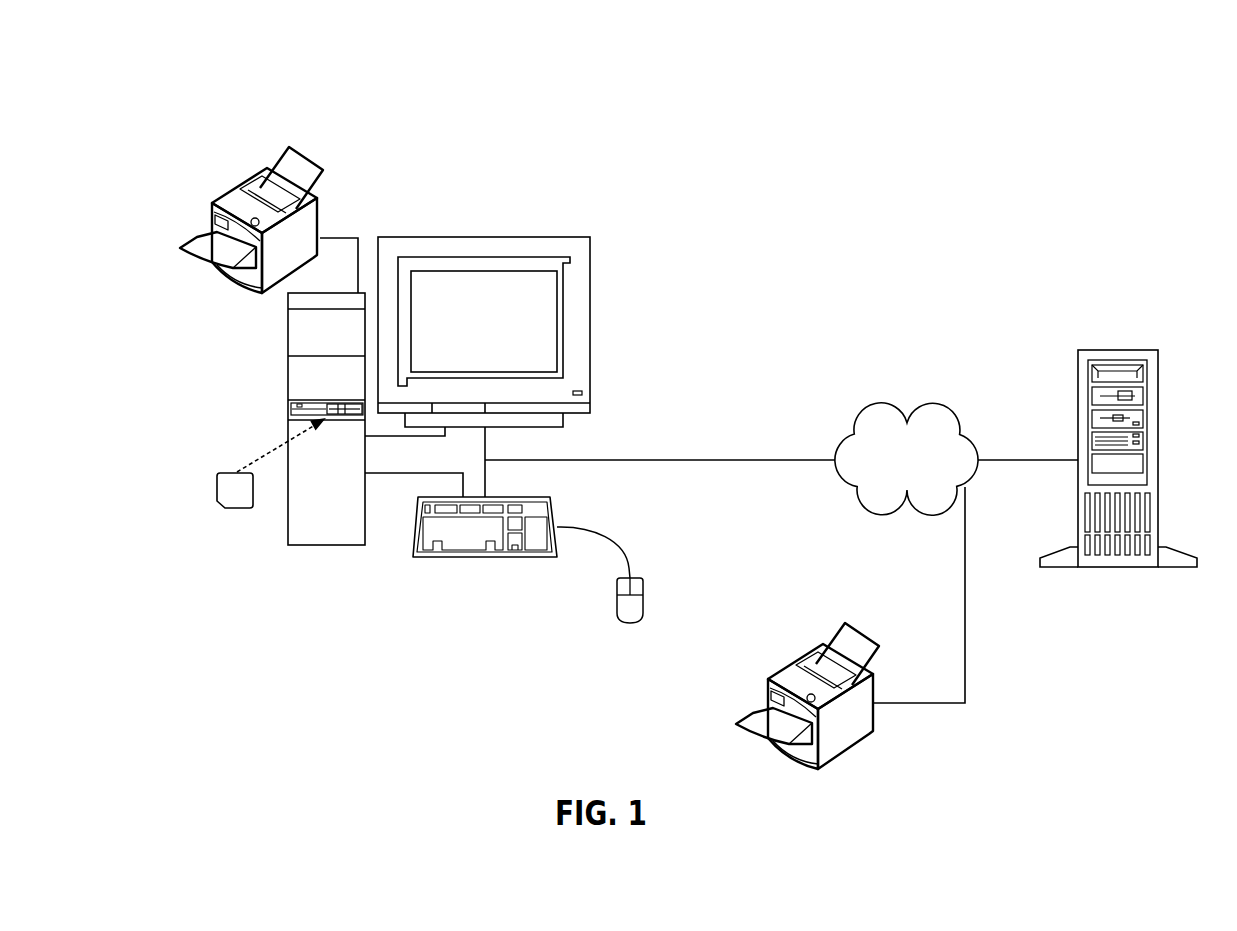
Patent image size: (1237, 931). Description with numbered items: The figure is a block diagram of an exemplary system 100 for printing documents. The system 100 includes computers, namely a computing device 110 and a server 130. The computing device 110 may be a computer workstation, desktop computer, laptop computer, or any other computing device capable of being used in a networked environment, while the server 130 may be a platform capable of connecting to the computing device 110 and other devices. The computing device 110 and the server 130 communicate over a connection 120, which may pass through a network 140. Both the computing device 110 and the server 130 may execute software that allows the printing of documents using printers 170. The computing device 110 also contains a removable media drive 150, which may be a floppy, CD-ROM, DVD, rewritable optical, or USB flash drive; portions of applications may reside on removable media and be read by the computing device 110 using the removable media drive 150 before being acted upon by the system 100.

The system 100 is at (337, 66).
The computing device 110 is at (483, 237).
The connection 120 is at (660, 448).
The server 130 is at (1118, 350).
The network 140 is at (925, 470).
The removable media drive 150 is at (270, 480).
The printers 170 is at (180, 247).